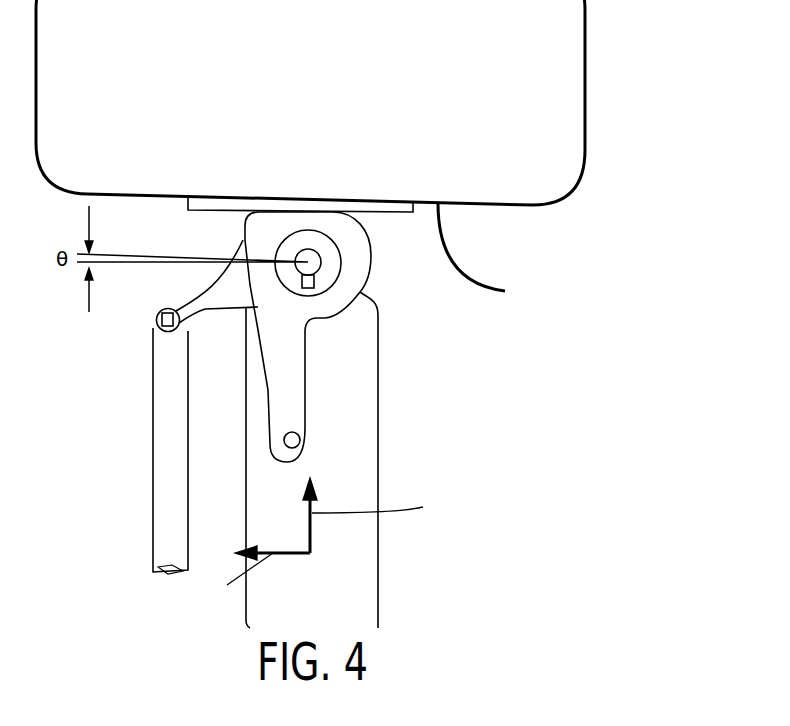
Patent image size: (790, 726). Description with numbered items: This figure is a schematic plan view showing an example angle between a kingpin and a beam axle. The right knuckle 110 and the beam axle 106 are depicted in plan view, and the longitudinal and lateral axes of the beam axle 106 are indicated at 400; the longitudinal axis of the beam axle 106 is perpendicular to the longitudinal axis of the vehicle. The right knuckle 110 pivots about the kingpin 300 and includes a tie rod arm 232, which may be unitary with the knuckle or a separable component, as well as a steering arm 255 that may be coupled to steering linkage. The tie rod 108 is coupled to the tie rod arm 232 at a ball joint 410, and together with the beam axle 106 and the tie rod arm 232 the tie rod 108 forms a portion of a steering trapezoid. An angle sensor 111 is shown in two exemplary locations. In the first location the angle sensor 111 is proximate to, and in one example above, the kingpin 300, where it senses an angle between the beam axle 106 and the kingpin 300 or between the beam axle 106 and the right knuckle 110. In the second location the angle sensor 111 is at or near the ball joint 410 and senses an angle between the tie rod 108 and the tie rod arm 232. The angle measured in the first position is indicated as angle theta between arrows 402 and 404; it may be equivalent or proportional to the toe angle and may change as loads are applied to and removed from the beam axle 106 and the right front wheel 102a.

The arrow 402 is at (88, 224).
The arrow 404 is at (88, 307).
The ball joint 410 is at (157, 318).
The tie rod arm 232 is at (200, 291).
The angle sensor 111 is at (315, 281).
The tie rod 108 is at (177, 440).
The kingpin 300 is at (318, 258).
The right knuckle 110 is at (330, 310).
The steering arm 255 is at (305, 422).
The longitudinal and lateral axes 400 is at (342, 530).
The beam axle 106 is at (362, 588).
The right front wheel 102a is at (496, 253).